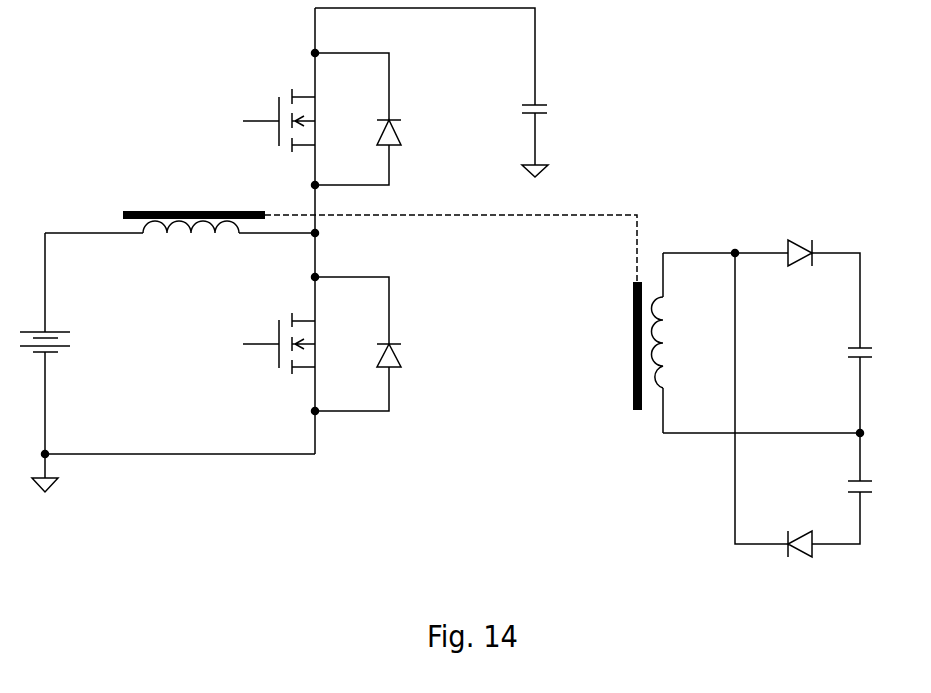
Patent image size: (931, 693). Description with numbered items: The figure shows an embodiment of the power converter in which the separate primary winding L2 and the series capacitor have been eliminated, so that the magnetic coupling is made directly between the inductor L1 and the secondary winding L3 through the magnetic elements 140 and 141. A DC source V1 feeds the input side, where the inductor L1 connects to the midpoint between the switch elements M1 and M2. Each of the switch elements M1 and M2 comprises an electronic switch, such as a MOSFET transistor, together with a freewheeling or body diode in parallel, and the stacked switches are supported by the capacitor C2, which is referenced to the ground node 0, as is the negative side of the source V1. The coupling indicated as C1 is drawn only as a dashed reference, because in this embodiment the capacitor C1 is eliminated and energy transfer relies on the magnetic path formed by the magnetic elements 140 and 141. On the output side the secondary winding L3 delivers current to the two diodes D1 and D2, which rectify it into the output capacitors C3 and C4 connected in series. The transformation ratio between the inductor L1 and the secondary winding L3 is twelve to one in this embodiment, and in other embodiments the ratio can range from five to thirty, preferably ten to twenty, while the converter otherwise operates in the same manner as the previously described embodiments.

The magnetic element 140 is at (633, 300).
The magnetic element 141 is at (141, 211).
The ground reference node 0 is at (294, 334).
The switch element M1 is at (277, 340).
The switch element M2 is at (277, 118).
The inductor L1 is at (191, 213).
The secondary winding L3 is at (687, 336).
The capacitor C1 is at (451, 237).
The capacitor C2 is at (520, 104).
The output capacitor C3 is at (842, 346).
The output capacitor C4 is at (842, 481).
The diode D1 is at (806, 241).
The diode D2 is at (806, 557).
The input voltage source V1 is at (55, 338).